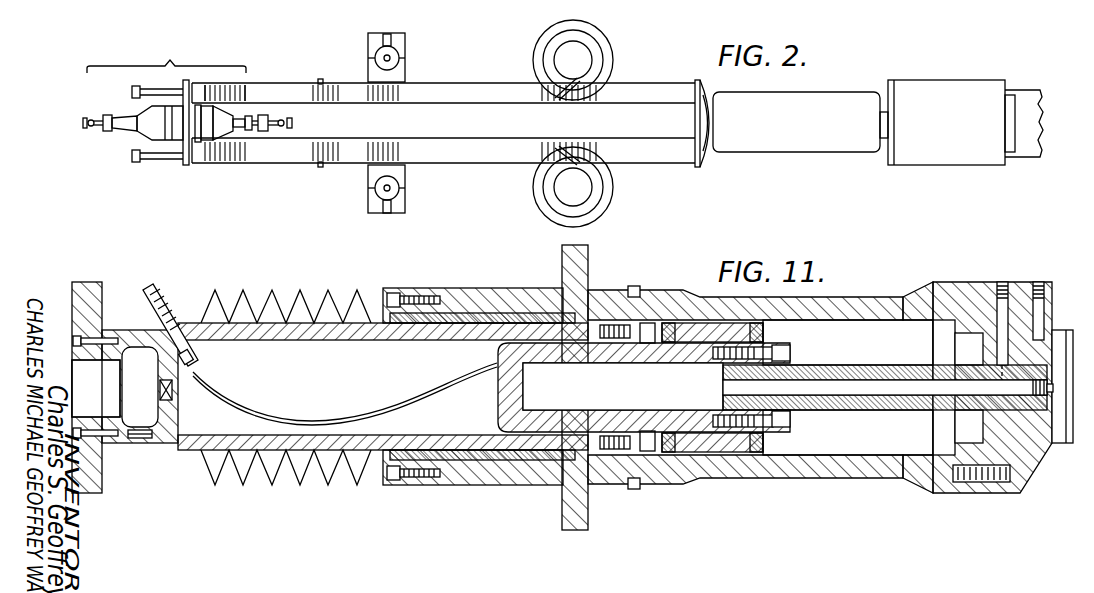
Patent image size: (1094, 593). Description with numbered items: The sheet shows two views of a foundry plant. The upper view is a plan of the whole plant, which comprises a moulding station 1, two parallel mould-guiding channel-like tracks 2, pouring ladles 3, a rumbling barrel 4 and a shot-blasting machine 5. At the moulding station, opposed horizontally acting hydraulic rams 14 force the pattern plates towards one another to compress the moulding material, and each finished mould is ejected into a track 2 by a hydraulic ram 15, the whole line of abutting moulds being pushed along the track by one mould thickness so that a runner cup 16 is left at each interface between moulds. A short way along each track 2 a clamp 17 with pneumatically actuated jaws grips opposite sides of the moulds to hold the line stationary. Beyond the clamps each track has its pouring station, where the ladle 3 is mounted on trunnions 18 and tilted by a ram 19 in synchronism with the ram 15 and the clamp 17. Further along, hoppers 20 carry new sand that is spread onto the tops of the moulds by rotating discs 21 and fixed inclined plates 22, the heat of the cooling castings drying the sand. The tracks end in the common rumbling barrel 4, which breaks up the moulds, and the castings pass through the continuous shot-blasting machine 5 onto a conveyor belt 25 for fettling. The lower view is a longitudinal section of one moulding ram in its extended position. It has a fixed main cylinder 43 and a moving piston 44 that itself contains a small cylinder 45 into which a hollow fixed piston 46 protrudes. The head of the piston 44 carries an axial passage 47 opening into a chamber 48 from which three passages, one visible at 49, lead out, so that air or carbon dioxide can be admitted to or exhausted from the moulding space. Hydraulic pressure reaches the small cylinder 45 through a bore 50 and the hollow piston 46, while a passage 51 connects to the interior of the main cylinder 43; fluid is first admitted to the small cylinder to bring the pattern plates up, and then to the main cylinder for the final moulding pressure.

In FIG. 2, the moulding station 1 is at (166, 54).
In FIG. 2, the mould-guiding channel-like track 2 is at (503, 95).
In FIG. 2, the pouring ladle 3 is at (393, 58).
In FIG. 2, the rumbling barrel 4 is at (772, 136).
In FIG. 2, the shot-blasting machine 5 is at (945, 136).
In FIG. 2, the hydraulic ram 14 is at (128, 132).
In FIG. 2, the hydraulic ram 15 is at (131, 89).
In FIG. 2, the runner cup 16 is at (232, 90).
In FIG. 2, the clamp 17 is at (318, 80).
In FIG. 2, the trunnions 18 is at (372, 62).
In FIG. 2, the ram 19 is at (383, 40).
In FIG. 2, the hopper 20 is at (585, 72).
In FIG. 2, the rotating disc 21 is at (612, 52).
In FIG. 2, the fixed inclined plate 22 is at (558, 92).
In FIG. 2, the conveyor belt 25 is at (1030, 150).
In FIG. 11, the fixed main cylinder 43 is at (904, 360).
In FIG. 11, the moving piston 44 is at (332, 448).
In FIG. 11, the small cylinder 45 is at (668, 406).
In FIG. 11, the hollow fixed piston 46 is at (918, 404).
In FIG. 11, the axial passage 47 is at (116, 400).
In FIG. 11, the chamber 48 is at (150, 369).
In FIG. 11, the passage 49 is at (140, 443).
In FIG. 11, the bore 50 is at (1006, 268).
In FIG. 11, the passage 51 is at (1046, 268).